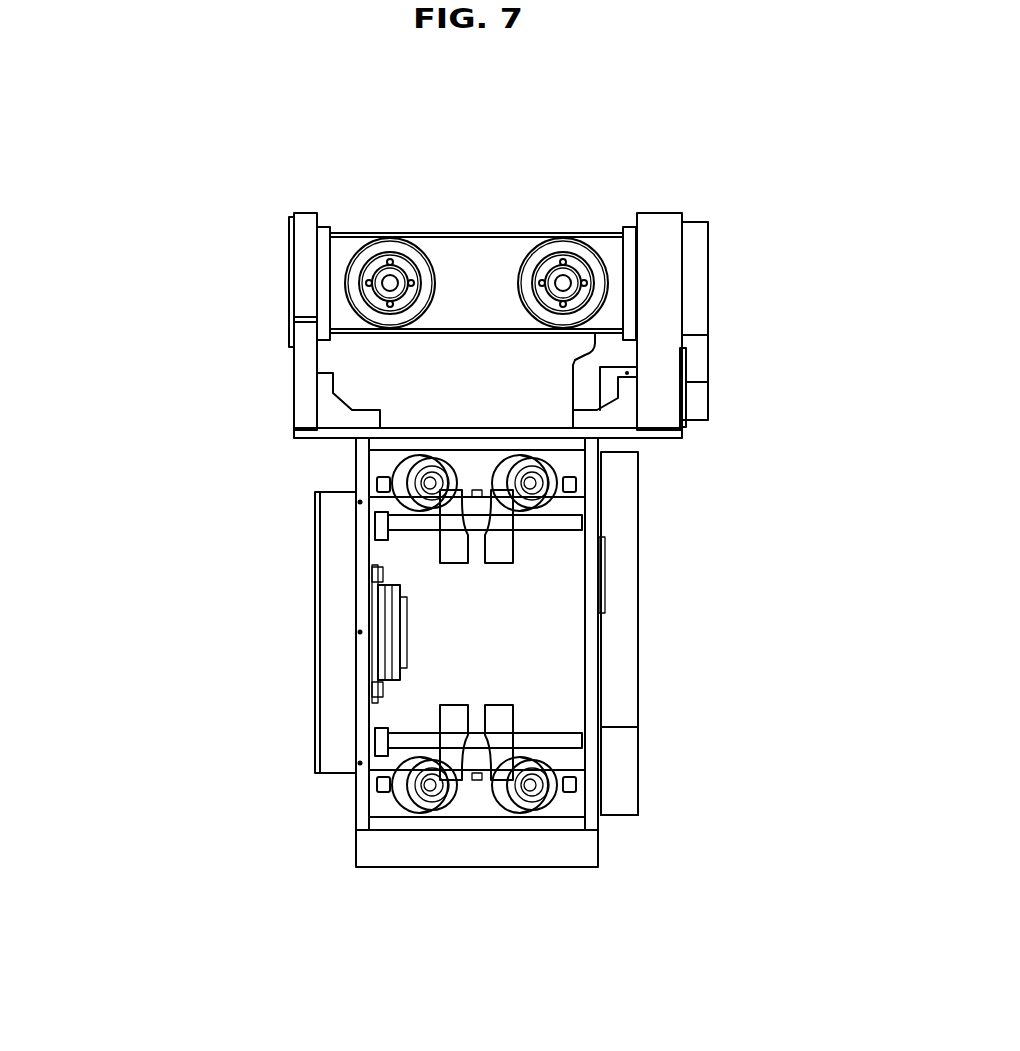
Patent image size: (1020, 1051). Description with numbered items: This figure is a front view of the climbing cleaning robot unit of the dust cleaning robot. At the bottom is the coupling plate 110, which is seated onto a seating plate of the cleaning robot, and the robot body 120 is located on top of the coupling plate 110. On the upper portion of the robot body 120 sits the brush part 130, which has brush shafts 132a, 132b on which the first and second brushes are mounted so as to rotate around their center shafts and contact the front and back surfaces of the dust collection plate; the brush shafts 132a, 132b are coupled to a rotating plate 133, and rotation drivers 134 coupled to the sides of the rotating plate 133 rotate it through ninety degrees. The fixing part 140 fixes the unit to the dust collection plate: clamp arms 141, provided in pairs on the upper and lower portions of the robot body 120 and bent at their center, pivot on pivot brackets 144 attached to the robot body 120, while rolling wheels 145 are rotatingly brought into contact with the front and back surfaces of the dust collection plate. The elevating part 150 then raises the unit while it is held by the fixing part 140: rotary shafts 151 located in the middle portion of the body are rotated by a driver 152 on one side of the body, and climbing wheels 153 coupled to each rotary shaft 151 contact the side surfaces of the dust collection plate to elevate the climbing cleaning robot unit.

The coupling plate 110 is at (365, 850).
The robot body 120 is at (232, 617).
The brush part 130 is at (200, 225).
The brush shaft 132a is at (385, 270).
The brush shaft 132b is at (558, 270).
The rotating plate 133 is at (613, 250).
The rotation driver 134 is at (698, 300).
The fixing part 140 is at (605, 490).
The clamp arm 141 is at (377, 480).
The pivot bracket 144 is at (360, 480).
The rolling wheel 145 is at (583, 498).
The elevating part 150 is at (665, 757).
The rotary shaft 151 is at (533, 732).
The driver 152 is at (640, 608).
The climbing wheel 153 is at (453, 735).